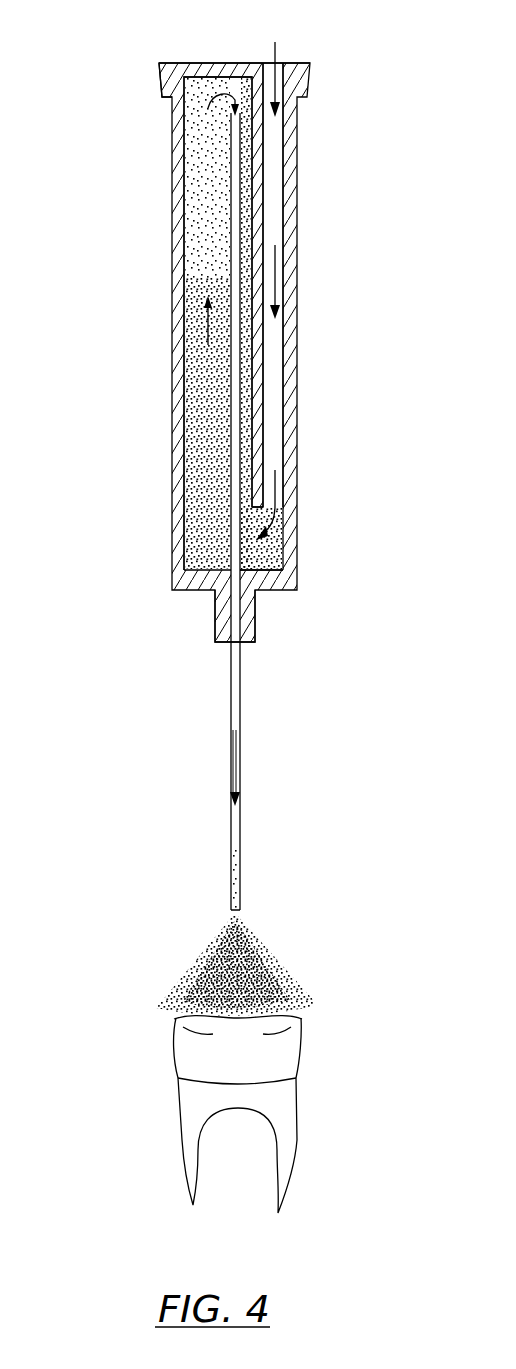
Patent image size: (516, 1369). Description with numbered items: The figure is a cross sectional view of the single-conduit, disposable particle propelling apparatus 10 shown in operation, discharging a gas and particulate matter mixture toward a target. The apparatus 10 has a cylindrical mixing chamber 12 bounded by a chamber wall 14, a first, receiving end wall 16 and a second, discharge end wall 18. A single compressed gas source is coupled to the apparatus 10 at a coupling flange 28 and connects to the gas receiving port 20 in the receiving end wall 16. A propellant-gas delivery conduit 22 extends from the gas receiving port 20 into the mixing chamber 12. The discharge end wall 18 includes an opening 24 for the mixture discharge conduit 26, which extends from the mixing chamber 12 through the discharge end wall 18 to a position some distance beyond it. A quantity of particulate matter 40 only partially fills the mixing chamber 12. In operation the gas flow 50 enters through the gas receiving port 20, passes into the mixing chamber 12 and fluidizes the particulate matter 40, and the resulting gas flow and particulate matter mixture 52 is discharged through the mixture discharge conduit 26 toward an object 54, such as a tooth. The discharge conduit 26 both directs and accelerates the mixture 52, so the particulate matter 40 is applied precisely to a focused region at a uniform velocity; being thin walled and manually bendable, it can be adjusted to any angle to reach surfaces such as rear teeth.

The single-conduit, disposable particle propelling apparatus 10 is at (118, 781).
The mixing chamber 12 is at (205, 178).
The chamber wall 14 is at (181, 232).
The receiving end wall 16 is at (199, 62).
The discharge end wall 18 is at (198, 594).
The gas receiving port 20 is at (283, 62).
The propellant-gas delivery conduit 22 is at (277, 197).
The opening 24 is at (229, 556).
The mixture discharge conduit 26 is at (190, 338).
The coupling flange 28 is at (161, 80).
The particulate matter 40 is at (215, 430).
The gas flow 50 is at (277, 286).
The gas flow and particulate matter mixture 52 is at (188, 143).
The object 54 is at (283, 1055).